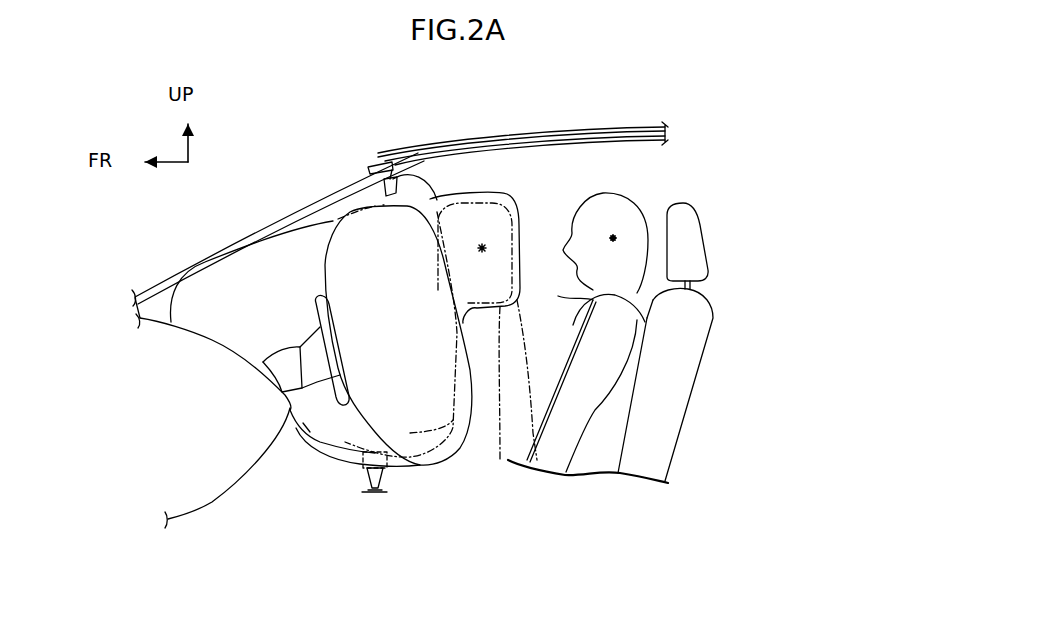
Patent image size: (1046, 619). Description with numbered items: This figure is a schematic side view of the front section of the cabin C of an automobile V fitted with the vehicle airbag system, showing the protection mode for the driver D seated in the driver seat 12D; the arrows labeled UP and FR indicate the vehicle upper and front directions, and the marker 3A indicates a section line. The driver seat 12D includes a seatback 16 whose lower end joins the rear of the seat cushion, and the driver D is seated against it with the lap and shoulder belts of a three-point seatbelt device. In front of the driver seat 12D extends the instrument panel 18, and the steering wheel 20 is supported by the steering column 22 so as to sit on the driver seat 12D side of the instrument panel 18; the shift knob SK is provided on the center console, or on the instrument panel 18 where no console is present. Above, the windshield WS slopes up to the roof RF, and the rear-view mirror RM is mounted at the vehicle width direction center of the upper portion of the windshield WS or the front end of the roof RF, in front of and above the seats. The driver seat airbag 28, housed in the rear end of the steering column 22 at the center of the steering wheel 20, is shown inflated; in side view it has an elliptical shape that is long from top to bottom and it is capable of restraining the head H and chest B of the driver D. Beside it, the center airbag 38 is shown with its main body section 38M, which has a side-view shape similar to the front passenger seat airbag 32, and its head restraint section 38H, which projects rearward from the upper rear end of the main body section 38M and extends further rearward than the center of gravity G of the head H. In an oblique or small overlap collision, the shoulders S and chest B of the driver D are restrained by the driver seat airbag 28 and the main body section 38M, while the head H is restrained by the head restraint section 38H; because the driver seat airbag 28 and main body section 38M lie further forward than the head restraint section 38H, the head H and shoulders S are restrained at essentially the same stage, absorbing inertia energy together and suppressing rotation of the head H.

The driver seat 12D is at (725, 278).
The seatback 16 is at (697, 358).
The instrument panel 18 is at (210, 348).
The steering wheel 20 is at (333, 342).
The steering column 22 is at (284, 381).
The driver seat airbag 28 is at (345, 260).
The front passenger seat airbag 32 is at (353, 458).
The center airbag 38 is at (336, 448).
The head restraint section 38H is at (477, 195).
The main body section 38M is at (303, 423).
The windshield WS is at (328, 181).
The roof RF is at (441, 142).
The rear-view mirror RM is at (405, 172).
The automobile V is at (514, 121).
The driver D is at (655, 193).
The head H is at (603, 194).
The center of gravity G is at (549, 255).
The cabin C is at (642, 176).
The shoulders S is at (462, 324).
The chest B is at (453, 360).
The shift knob SK is at (385, 475).
The section line 3A is at (299, 310).